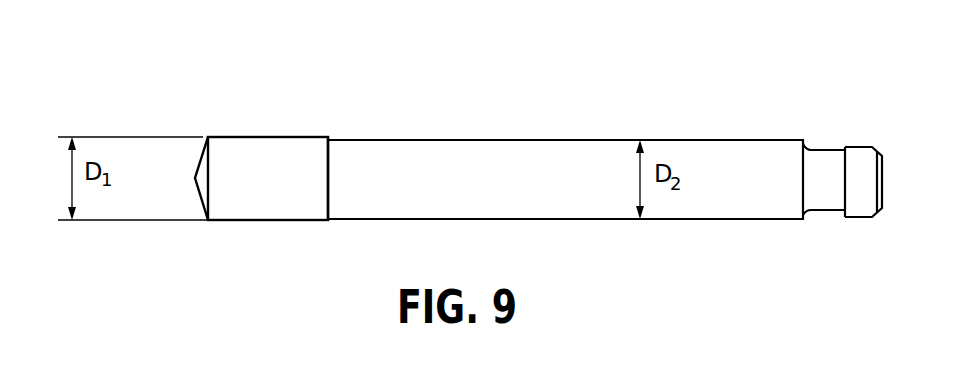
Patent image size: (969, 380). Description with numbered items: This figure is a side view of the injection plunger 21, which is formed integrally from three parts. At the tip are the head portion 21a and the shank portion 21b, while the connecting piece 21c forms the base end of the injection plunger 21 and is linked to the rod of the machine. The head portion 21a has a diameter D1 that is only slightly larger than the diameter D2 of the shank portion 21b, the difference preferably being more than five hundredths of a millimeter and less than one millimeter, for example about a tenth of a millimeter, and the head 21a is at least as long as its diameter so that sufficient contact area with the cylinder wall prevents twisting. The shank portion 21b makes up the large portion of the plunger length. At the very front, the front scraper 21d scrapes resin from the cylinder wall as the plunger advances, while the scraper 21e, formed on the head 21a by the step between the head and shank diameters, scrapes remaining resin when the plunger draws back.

The injection plunger 21 is at (536, 58).
The head portion 21a is at (261, 155).
The shank portion 21b is at (508, 153).
The connecting piece 21c is at (825, 130).
The front scraper 21d is at (187, 123).
The scraper 21e is at (337, 127).